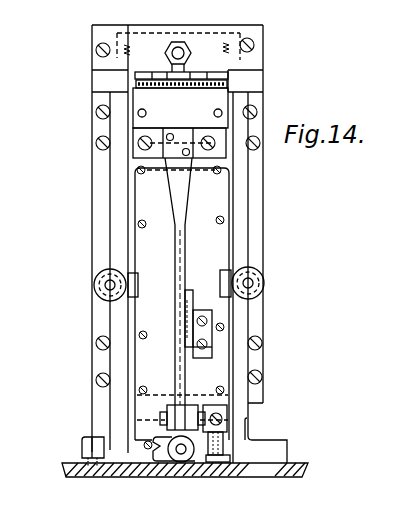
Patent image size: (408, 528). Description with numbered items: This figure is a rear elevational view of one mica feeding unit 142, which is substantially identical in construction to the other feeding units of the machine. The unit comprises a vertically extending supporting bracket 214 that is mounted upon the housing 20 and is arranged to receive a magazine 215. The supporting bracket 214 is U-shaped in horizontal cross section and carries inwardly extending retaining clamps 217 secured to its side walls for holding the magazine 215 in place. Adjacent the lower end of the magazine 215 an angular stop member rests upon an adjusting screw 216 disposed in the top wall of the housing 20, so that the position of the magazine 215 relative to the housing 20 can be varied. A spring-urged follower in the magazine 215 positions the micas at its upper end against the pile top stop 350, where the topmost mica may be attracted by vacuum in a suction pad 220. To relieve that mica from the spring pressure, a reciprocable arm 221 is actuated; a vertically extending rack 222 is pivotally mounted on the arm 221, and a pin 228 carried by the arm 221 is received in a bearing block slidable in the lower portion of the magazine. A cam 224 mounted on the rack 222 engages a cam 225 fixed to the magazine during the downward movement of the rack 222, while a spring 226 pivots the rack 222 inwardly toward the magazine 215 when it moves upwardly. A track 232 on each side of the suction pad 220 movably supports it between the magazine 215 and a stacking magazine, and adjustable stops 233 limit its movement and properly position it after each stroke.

The housing 20 is at (300, 463).
The mica feeding unit 142 is at (265, 212).
The supporting bracket 214 is at (247, 442).
The magazine 215 is at (208, 250).
The adjusting screw 216 is at (212, 460).
The retaining clamps 217 is at (130, 308).
The suction pad 220 is at (157, 72).
The reciprocable arm 221 is at (167, 464).
The rack 222 is at (180, 357).
The cam 224 is at (190, 298).
The cam 225 is at (210, 327).
The spring 226 is at (178, 193).
The pin 228 is at (179, 455).
The track 232 is at (117, 56).
The adjustable stops 233 is at (187, 45).
The pile top stop 350 is at (110, 84).